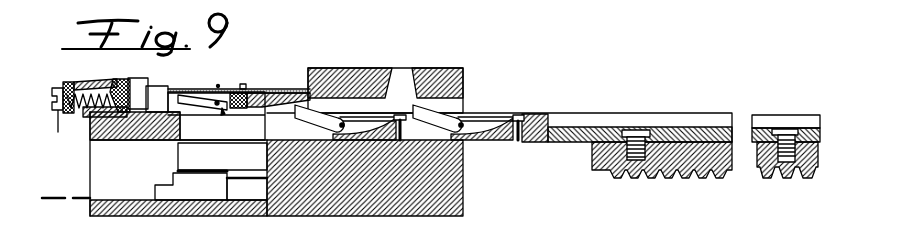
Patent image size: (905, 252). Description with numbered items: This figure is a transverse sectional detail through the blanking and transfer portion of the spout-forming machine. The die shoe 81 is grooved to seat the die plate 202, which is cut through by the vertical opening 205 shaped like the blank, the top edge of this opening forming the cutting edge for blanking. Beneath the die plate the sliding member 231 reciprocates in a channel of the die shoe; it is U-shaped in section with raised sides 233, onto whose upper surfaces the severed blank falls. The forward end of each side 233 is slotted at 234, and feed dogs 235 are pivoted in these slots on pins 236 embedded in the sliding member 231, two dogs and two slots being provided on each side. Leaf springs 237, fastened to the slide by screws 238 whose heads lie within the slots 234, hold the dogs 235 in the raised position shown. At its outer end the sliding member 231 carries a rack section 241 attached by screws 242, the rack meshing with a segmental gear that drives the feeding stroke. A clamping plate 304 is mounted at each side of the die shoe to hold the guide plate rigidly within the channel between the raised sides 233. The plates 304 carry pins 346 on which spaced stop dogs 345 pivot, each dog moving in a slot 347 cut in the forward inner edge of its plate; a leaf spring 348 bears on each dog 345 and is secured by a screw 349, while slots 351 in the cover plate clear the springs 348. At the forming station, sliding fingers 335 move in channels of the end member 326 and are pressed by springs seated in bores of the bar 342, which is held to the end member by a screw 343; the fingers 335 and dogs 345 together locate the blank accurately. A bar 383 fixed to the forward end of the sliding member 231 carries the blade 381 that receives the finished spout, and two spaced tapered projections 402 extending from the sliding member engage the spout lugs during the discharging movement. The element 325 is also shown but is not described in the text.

The die shoe 81 is at (464, 180).
The die plate 202 is at (465, 76).
The vertical opening 205 is at (403, 69).
The sliding member 231 is at (689, 137).
The raised sides 233 is at (652, 120).
The slots 234 is at (511, 115).
The feed dogs 235 is at (464, 124).
The pin 236 is at (343, 123).
The leaf springs 237 is at (572, 103).
The screws 238 is at (519, 142).
The rack section 241 is at (707, 179).
The screws 242 is at (790, 131).
The clamping plate 304 is at (261, 94).
The hatched support 325 is at (110, 135).
The end member 326 is at (88, 81).
The sliding fingers 335 is at (119, 80).
The bar 342 is at (68, 84).
The screw 343 is at (59, 115).
The stop dogs 345 is at (180, 104).
The pins 346 is at (244, 84).
The slot 347 is at (224, 114).
The leaf spring 348 is at (197, 85).
The screw 349 is at (247, 90).
The slots 351 is at (177, 82).
The blade 381 is at (52, 203).
The bar 383 is at (173, 198).
The projections 402 is at (182, 157).